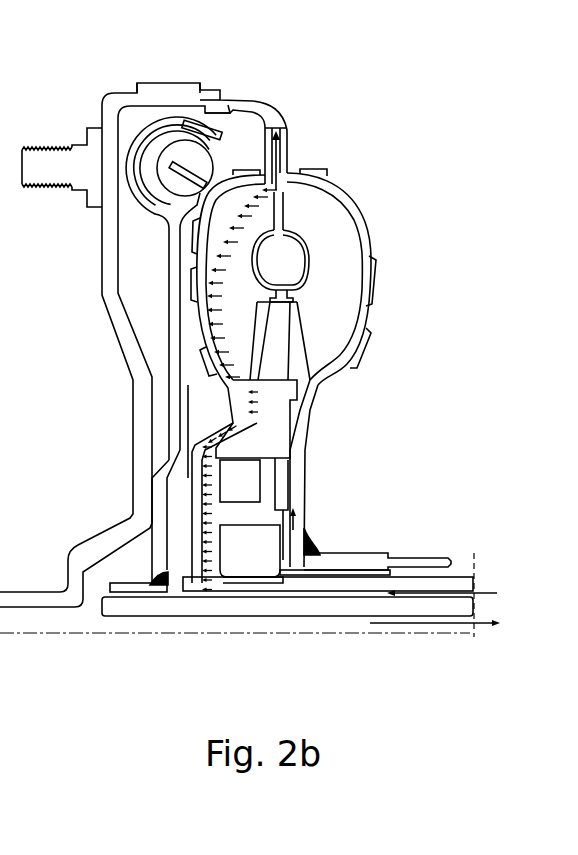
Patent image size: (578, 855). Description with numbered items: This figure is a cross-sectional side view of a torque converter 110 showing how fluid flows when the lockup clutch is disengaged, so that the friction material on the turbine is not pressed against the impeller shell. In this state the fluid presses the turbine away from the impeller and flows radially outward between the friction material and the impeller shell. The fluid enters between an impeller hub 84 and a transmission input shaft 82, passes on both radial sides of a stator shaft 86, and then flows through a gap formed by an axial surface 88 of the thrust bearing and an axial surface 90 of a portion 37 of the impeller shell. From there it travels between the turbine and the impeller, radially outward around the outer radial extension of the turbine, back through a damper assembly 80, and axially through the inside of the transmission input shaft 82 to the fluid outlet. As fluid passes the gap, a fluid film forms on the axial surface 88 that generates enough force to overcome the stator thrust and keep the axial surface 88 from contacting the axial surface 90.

The torque converter 110 is at (420, 103).
The damper assembly 80 is at (140, 120).
The axial surface 90 is at (283, 486).
The axial surface 88 is at (283, 480).
The portion 37 is at (318, 500).
The impeller hub 84 is at (382, 553).
The stator shaft 86 is at (343, 592).
The transmission input shaft 82 is at (252, 603).